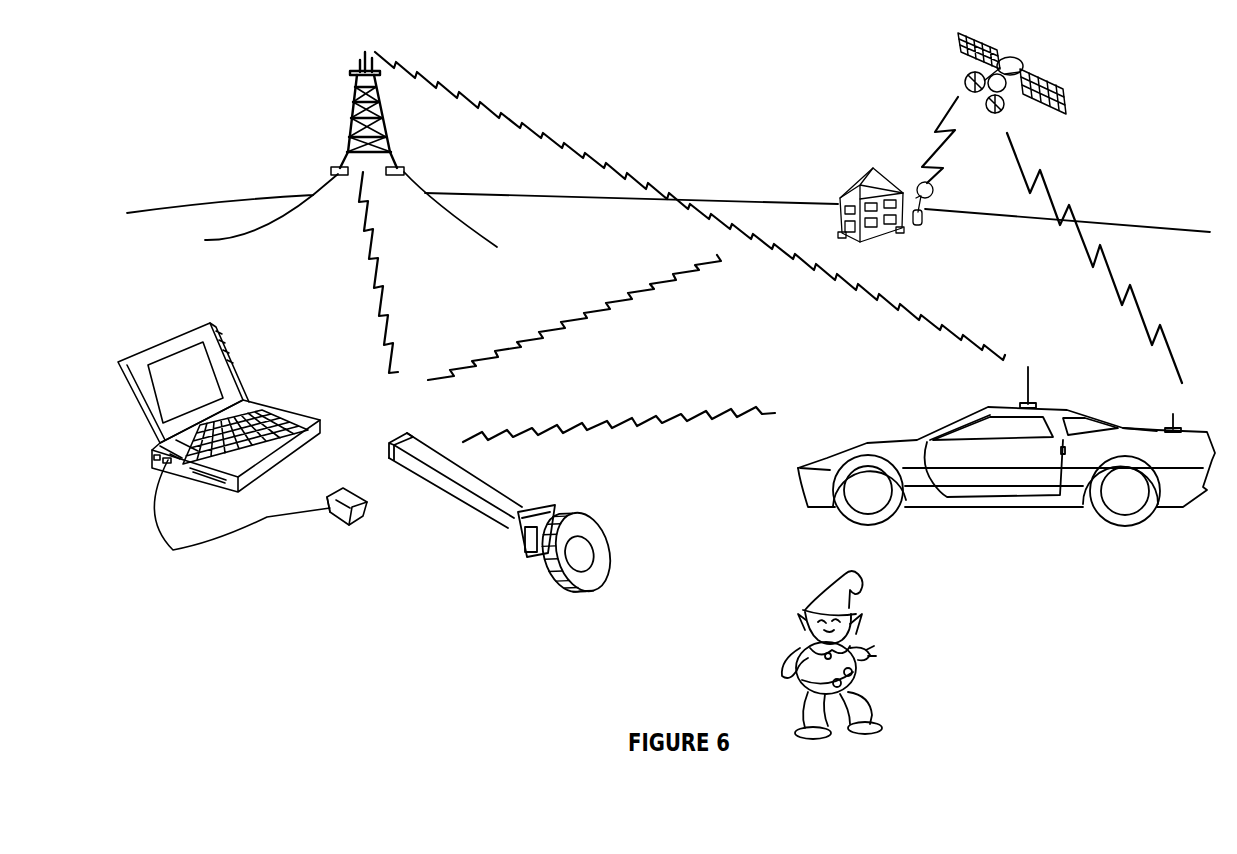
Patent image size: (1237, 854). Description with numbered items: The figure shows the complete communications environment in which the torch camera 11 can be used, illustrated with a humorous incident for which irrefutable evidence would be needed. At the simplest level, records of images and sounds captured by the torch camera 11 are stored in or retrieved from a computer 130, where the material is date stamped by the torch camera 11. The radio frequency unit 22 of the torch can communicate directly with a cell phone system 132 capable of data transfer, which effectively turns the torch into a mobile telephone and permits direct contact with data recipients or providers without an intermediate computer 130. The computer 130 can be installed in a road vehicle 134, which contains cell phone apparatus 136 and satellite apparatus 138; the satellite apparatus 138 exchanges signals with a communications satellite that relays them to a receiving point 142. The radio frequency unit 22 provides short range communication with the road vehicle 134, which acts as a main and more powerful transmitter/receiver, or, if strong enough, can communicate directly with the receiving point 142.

The torch camera 11 is at (503, 499).
The radio frequency unit 22 is at (415, 443).
The computer 130 is at (267, 412).
The cell phone system 132 is at (388, 152).
The road vehicle 134 is at (830, 457).
The cell phone apparatus 136 is at (1030, 402).
The satellite apparatus 138 is at (1168, 422).
The receiving point 142 is at (840, 190).